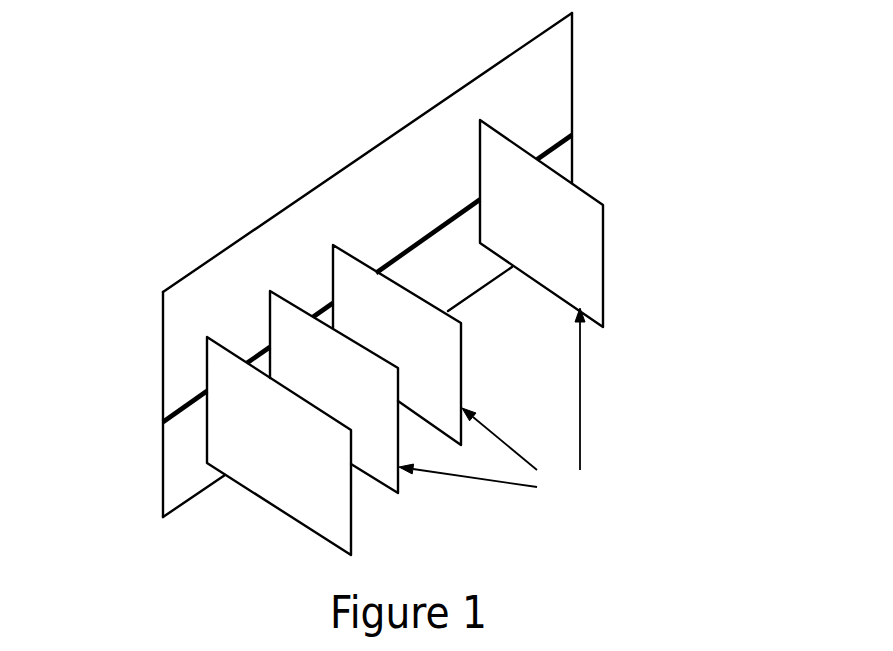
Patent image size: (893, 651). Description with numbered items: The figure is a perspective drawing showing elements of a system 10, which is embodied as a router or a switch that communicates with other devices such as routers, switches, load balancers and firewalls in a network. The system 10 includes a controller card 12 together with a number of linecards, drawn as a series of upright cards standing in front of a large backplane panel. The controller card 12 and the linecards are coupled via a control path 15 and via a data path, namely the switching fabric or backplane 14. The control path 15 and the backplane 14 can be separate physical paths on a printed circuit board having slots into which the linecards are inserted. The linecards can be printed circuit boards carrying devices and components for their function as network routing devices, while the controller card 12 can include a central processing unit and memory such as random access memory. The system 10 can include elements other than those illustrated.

The system 10 is at (63, 144).
The controller card 12 is at (189, 449).
The switching fabric or backplane 14 is at (585, 162).
The control path 15 is at (150, 288).